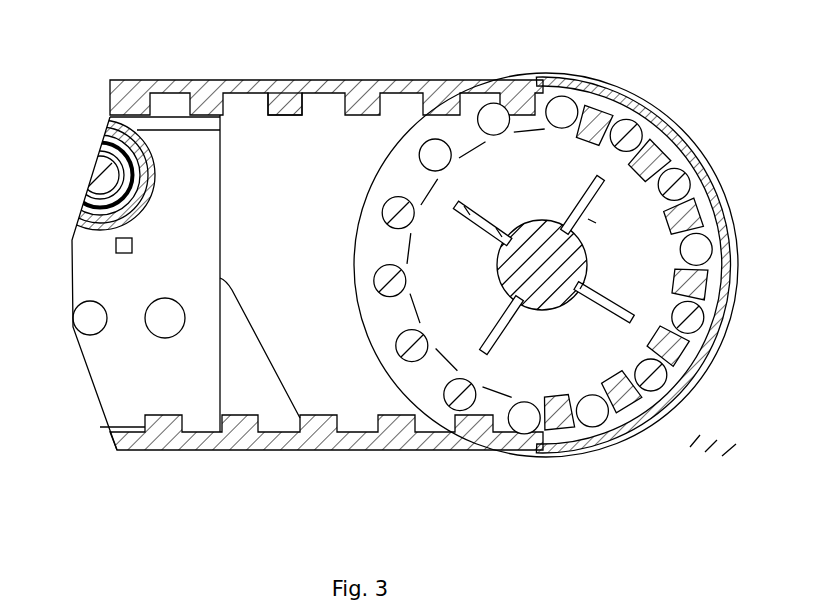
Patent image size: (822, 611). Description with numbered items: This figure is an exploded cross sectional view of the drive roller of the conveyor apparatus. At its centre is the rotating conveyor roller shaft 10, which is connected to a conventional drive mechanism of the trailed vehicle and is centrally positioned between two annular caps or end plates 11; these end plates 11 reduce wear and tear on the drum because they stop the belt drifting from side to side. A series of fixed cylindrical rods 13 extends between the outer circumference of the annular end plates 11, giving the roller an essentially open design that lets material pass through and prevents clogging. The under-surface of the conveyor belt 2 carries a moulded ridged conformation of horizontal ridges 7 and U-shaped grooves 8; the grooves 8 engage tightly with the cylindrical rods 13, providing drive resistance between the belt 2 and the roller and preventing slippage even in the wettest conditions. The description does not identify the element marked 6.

The conveyor belt 2 is at (360, 90).
The bearing 6 is at (113, 147).
The horizontal ridges 7 is at (281, 113).
The U-shaped grooves 8 is at (242, 107).
The conveyor roller shaft 10 is at (550, 267).
The annular end plates 11 is at (643, 235).
The cylindrical rods 13 is at (558, 238).